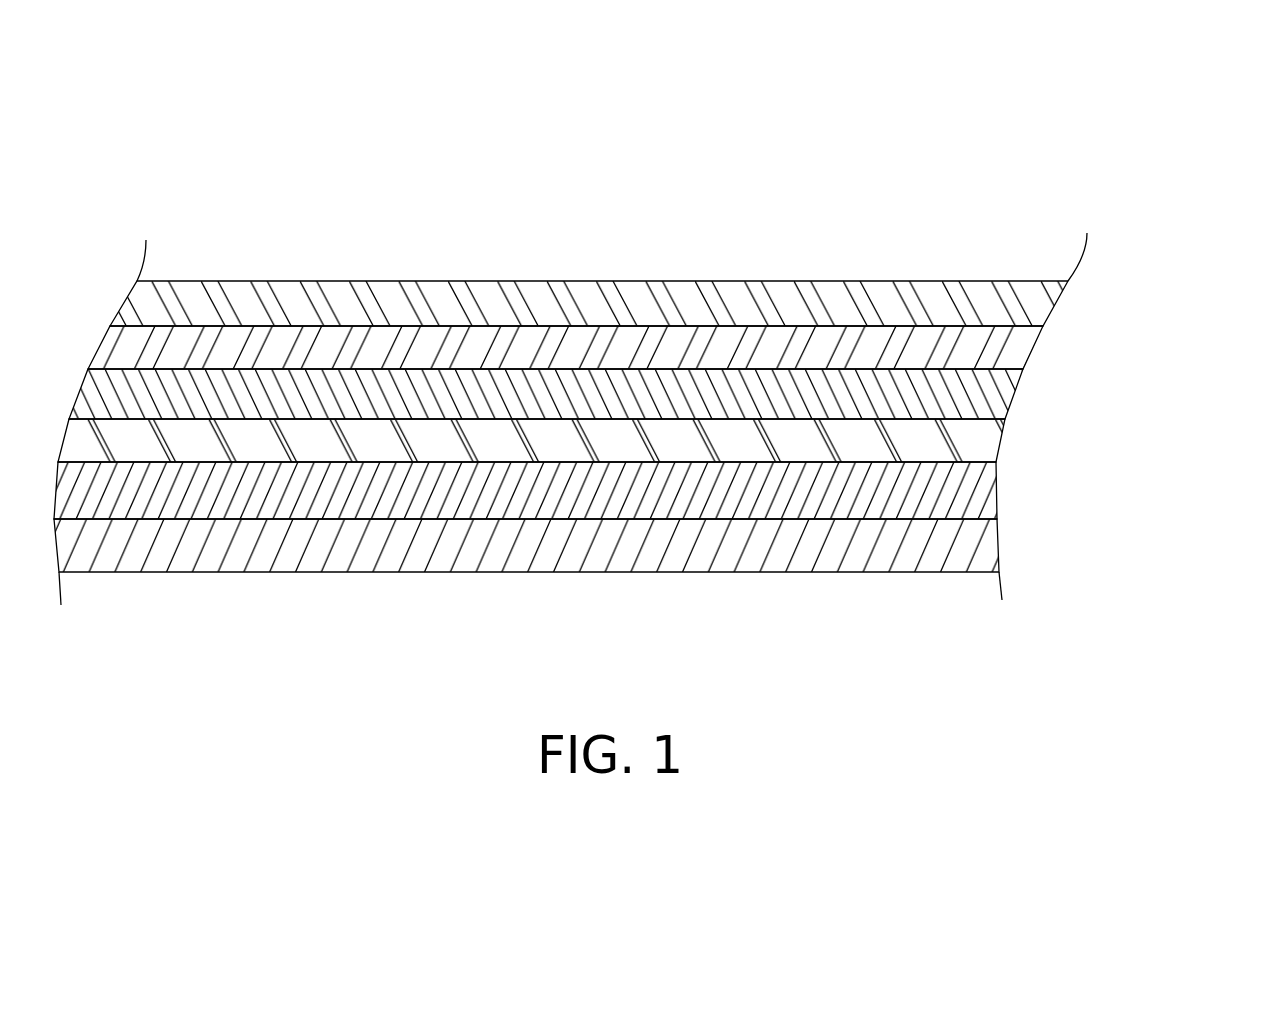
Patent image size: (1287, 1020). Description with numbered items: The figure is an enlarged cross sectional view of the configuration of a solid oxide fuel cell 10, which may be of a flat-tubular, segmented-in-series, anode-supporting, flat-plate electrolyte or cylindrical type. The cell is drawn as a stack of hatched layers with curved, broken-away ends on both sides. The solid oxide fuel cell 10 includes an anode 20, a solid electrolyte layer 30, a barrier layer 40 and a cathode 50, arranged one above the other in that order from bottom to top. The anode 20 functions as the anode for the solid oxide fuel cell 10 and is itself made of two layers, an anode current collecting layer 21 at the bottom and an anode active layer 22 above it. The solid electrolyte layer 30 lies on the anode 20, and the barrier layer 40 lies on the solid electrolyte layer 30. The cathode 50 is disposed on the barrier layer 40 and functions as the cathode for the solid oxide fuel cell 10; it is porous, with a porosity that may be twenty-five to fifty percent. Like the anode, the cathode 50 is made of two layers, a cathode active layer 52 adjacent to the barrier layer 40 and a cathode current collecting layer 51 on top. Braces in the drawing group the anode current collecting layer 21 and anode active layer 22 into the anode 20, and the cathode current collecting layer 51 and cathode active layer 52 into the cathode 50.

The solid oxide fuel cell 10 is at (107, 212).
The anode 20 is at (1147, 487).
The anode current collecting layer 21 is at (988, 550).
The anode active layer 22 is at (990, 507).
The solid electrolyte layer 30 is at (987, 445).
The barrier layer 40 is at (987, 402).
The cathode 50 is at (1188, 285).
The cathode current collecting layer 51 is at (1028, 307).
The cathode active layer 52 is at (1027, 350).